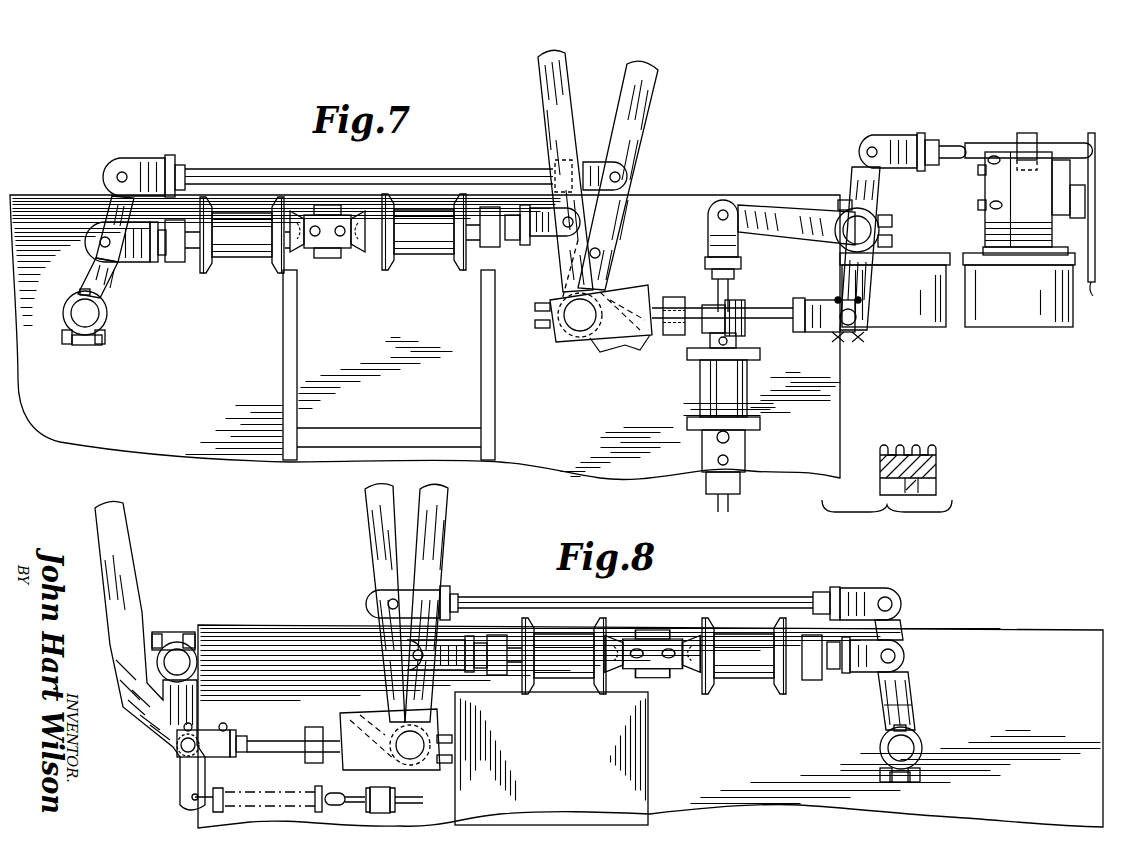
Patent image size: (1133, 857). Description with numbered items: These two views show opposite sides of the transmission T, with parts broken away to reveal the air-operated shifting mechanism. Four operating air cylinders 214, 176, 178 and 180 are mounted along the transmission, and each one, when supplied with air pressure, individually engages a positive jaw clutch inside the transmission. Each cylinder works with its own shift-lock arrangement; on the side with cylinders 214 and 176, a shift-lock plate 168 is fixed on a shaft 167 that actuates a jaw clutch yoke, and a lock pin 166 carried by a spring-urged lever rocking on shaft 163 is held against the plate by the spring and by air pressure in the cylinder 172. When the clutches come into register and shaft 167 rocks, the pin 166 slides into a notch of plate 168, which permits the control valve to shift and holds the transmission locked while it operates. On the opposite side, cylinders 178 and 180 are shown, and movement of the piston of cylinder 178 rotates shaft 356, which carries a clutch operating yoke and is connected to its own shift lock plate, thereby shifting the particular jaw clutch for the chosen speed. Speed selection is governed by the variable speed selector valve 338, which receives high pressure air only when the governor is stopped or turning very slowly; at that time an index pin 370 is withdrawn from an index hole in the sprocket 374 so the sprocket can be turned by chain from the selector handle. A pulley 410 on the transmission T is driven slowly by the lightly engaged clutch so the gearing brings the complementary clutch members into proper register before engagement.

In FIG. 7, the transmission T is at (835, 367).
In FIG. 8, the transmission T is at (1017, 638).
In FIG. 7, the air cylinder 176 is at (238, 270).
In FIG. 7, the air cylinder 214 is at (420, 255).
In FIG. 7, the shift-lock plate 168 is at (625, 298).
In FIG. 7, the shaft 167 is at (578, 325).
In FIG. 7, the lock pin 166 is at (690, 310).
In FIG. 7, the cylinder 172 is at (703, 390).
In FIG. 7, the shaft 163 is at (872, 220).
In FIG. 7, the variable speed selector valve 338 is at (990, 155).
In FIG. 7, the index pin 370 is at (1075, 133).
In FIG. 7, the sprocket 374 is at (1086, 224).
In FIG. 7, the pulley 410 is at (942, 460).
In FIG. 8, the air cylinder 178 is at (562, 678).
In FIG. 8, the air cylinder 180 is at (745, 677).
In FIG. 8, the shaft 356 is at (432, 760).